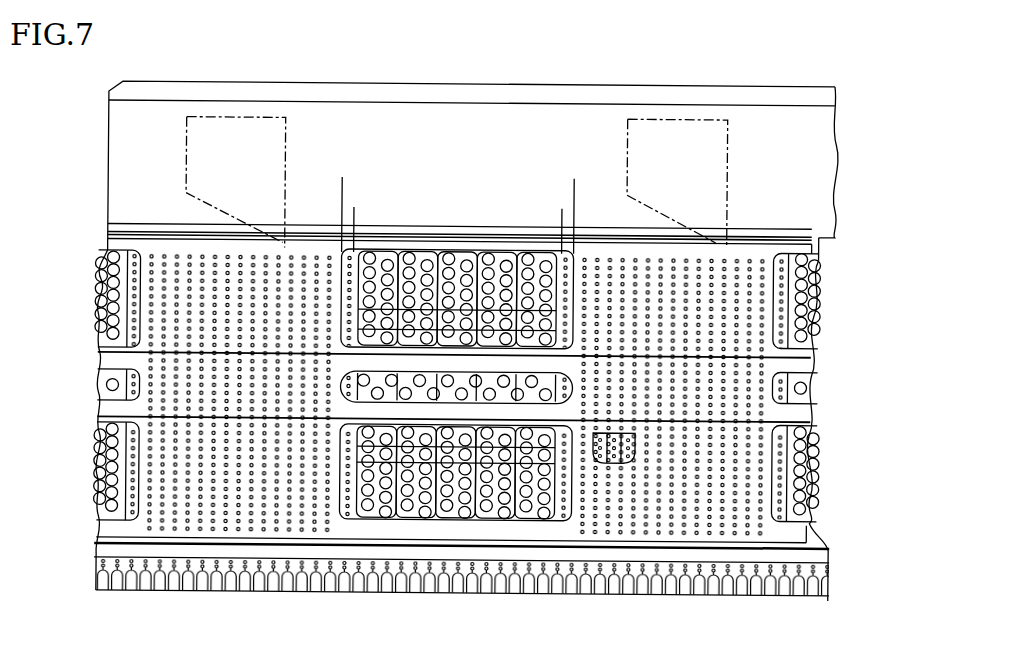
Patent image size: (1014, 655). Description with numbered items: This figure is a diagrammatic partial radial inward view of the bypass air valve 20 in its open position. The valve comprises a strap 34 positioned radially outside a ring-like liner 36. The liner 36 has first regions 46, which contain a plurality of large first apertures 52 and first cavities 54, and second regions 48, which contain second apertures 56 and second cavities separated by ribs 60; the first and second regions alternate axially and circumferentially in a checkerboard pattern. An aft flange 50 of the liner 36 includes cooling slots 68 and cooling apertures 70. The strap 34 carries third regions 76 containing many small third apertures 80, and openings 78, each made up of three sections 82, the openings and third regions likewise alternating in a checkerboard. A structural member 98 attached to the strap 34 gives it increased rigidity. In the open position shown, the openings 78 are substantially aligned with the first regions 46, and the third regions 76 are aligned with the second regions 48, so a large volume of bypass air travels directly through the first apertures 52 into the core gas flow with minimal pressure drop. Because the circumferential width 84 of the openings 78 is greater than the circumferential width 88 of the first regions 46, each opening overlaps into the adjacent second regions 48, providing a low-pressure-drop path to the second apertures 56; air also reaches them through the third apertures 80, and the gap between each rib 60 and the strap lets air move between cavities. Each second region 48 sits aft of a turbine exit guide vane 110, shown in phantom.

The bypass air valve 20 is at (96, 134).
The strap 34 is at (302, 242).
The liner 36 is at (112, 202).
The first regions 46 is at (818, 466).
The second regions 48 is at (579, 253).
The aft flange 50 is at (126, 556).
The first apertures 52 is at (818, 300).
The first cavities 54 is at (807, 509).
The second apertures 56 is at (136, 292).
The ribs 60 is at (600, 459).
The cooling slots 68 is at (814, 582).
The cooling apertures 70 is at (823, 557).
The third regions 76 is at (742, 247).
The openings 78 is at (120, 410).
The third apertures 80 is at (238, 514).
The sections 82 is at (542, 514).
The circumferential width 84 is at (573, 180).
The circumferential width 88 is at (357, 210).
The structural member 98 is at (792, 355).
The turbine exit guide vane 110 is at (187, 168).